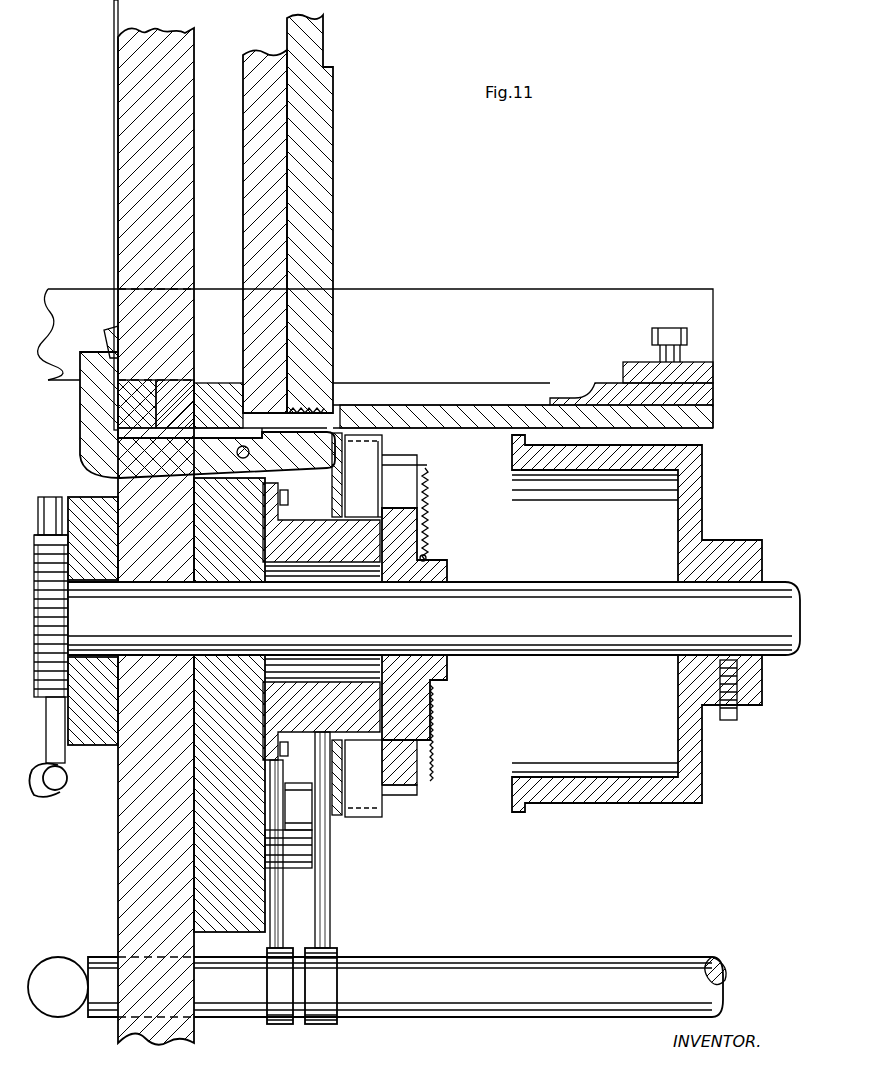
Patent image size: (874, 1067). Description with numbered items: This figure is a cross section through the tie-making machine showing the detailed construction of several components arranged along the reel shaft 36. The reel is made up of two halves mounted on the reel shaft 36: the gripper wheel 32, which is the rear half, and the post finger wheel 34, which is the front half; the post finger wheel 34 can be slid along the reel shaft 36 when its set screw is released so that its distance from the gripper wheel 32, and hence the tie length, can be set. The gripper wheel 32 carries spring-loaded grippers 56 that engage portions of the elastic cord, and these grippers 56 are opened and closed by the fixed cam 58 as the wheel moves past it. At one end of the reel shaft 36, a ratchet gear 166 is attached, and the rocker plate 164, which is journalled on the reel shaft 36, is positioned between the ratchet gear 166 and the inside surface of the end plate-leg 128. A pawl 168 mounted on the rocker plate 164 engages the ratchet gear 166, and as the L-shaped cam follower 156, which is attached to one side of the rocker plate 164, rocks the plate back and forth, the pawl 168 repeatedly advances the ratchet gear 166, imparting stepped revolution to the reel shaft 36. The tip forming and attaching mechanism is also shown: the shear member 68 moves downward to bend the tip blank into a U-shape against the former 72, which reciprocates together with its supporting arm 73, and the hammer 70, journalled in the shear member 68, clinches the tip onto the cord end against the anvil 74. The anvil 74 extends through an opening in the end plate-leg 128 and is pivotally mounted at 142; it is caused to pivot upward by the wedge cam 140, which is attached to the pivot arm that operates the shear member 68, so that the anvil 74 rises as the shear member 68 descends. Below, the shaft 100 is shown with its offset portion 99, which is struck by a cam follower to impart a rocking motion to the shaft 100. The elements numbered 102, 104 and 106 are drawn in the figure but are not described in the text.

The gripper wheel 32 is at (441, 695).
The post finger wheel 34 is at (590, 545).
The reel shaft 36 is at (530, 627).
The grippers 56 is at (372, 449).
The fixed cam 58 is at (317, 532).
The shear member 68 is at (252, 118).
The hammer 70 is at (320, 117).
The former 72 is at (705, 386).
The supporting arm 73 is at (706, 329).
The anvil 74 is at (96, 453).
The offset portion 99 is at (62, 1018).
The shaft 100 is at (466, 992).
The rod 102 is at (305, 808).
The rod 104 is at (277, 890).
The collar 106 is at (305, 850).
The end plate-leg 128 is at (186, 42).
The wedge cam 140 is at (114, 247).
The anvil pivot 142 is at (236, 453).
The cam follower 156 is at (50, 796).
The rocker plate 164 is at (104, 740).
The ratchet gear 166 is at (34, 545).
The pawl 168 is at (53, 507).